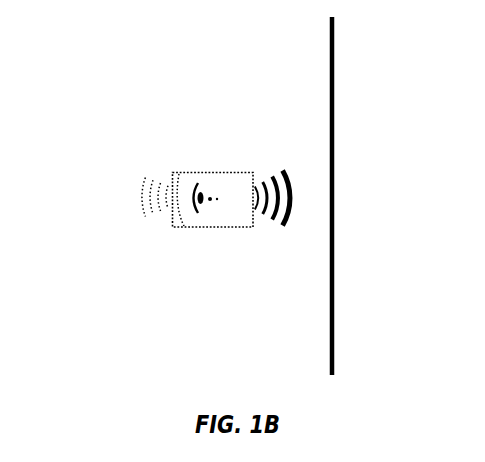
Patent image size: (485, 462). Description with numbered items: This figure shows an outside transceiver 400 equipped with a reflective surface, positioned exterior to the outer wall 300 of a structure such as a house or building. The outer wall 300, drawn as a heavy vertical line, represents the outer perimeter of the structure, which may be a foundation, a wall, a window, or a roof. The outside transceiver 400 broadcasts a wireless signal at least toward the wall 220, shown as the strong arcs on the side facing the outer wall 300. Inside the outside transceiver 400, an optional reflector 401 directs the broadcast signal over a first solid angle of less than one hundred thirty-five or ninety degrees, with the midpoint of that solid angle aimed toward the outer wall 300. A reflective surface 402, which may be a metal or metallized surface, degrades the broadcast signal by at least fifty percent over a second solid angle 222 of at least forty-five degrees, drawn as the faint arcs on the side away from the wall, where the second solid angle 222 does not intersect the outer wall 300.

The outside transceiver 400 is at (222, 172).
The reflector 401 is at (197, 182).
The reflective surface 402 is at (184, 227).
The wireless signal toward the wall 220 is at (276, 270).
The second solid angle 222 is at (154, 244).
The outer wall 300 is at (334, 338).